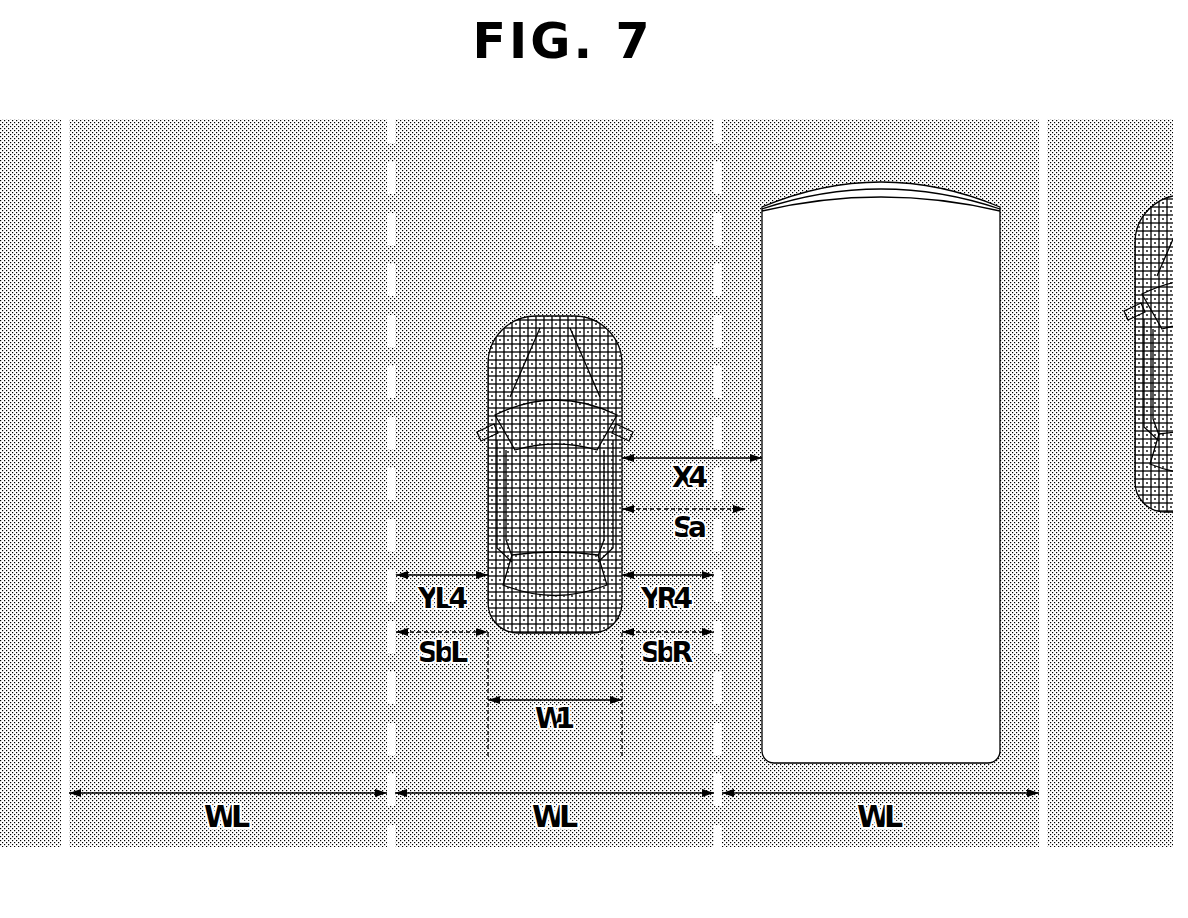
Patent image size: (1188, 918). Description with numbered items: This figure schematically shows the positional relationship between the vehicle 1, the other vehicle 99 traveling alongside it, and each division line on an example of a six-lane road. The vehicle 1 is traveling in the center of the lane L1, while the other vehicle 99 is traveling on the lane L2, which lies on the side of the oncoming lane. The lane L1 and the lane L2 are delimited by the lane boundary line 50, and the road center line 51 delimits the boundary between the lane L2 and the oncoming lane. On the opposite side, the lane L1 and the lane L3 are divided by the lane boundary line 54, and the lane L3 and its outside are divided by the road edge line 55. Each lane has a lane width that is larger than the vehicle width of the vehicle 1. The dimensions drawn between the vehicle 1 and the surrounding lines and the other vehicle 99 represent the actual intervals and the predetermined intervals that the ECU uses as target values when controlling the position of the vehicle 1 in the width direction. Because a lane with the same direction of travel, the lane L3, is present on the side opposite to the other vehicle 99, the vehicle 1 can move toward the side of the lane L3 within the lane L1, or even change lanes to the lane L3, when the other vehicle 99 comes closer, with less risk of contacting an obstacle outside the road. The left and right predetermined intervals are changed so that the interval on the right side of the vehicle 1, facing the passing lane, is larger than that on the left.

The vehicle 1 is at (540, 316).
The other vehicle 99 is at (807, 187).
The road edge line 55 is at (65, 813).
The lane boundary line 54 is at (391, 805).
The lane boundary line 50 is at (716, 805).
The road center line 51 is at (1043, 805).
The lane L1 is at (554, 483).
The lane L2 is at (880, 483).
The lane L3 is at (228, 483).